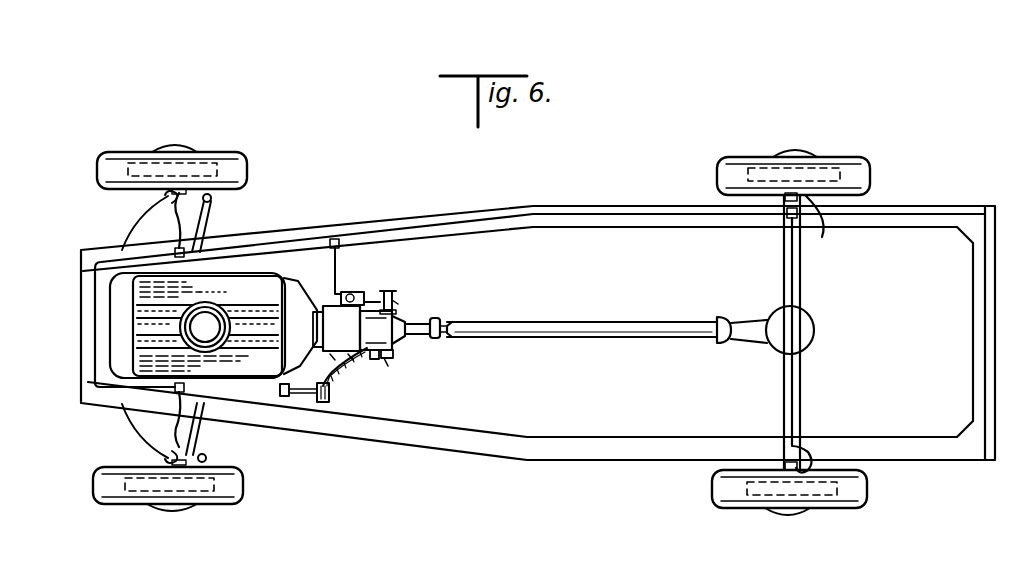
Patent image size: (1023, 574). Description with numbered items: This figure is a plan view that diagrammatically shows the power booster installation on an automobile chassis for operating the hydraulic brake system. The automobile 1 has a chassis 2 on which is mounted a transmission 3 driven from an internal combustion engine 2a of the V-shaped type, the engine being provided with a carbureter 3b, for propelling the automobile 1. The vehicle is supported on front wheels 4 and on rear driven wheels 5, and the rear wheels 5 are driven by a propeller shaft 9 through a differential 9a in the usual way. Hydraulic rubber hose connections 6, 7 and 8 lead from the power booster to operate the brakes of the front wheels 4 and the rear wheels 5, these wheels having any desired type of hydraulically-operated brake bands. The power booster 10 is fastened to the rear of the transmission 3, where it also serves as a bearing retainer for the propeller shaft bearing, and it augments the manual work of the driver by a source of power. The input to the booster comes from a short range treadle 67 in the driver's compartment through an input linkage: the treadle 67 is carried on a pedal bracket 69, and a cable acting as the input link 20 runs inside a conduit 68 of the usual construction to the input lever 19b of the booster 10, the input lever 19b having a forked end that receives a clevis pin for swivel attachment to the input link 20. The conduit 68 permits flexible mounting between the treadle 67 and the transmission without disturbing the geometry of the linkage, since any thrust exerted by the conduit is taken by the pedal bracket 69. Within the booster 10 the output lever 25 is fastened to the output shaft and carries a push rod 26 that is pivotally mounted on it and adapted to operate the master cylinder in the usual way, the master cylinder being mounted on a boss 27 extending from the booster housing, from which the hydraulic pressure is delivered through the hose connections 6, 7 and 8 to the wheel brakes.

The automobile 1 is at (316, 136).
The chassis 2 is at (535, 452).
The internal combustion engine 2a is at (142, 325).
The transmission 3 is at (330, 328).
The carbureter 3b is at (205, 317).
The front wheels 4 is at (122, 152).
The rear driven wheels 5 is at (857, 160).
The hydraulic rubber hose connection 6 is at (207, 217).
The hydraulic rubber hose connection 7 is at (822, 237).
The hydraulic rubber hose connection 8 is at (492, 222).
The propeller shaft 9 is at (573, 325).
The differential 9a is at (810, 324).
The power booster 10 is at (407, 307).
The input lever 19b is at (393, 351).
The input link 20 is at (375, 353).
The output lever 25 is at (396, 302).
The push rod 26 is at (378, 291).
The boss 27 is at (352, 292).
The treadle 67 is at (330, 397).
The conduit 68 is at (355, 352).
The pedal bracket 69 is at (275, 400).